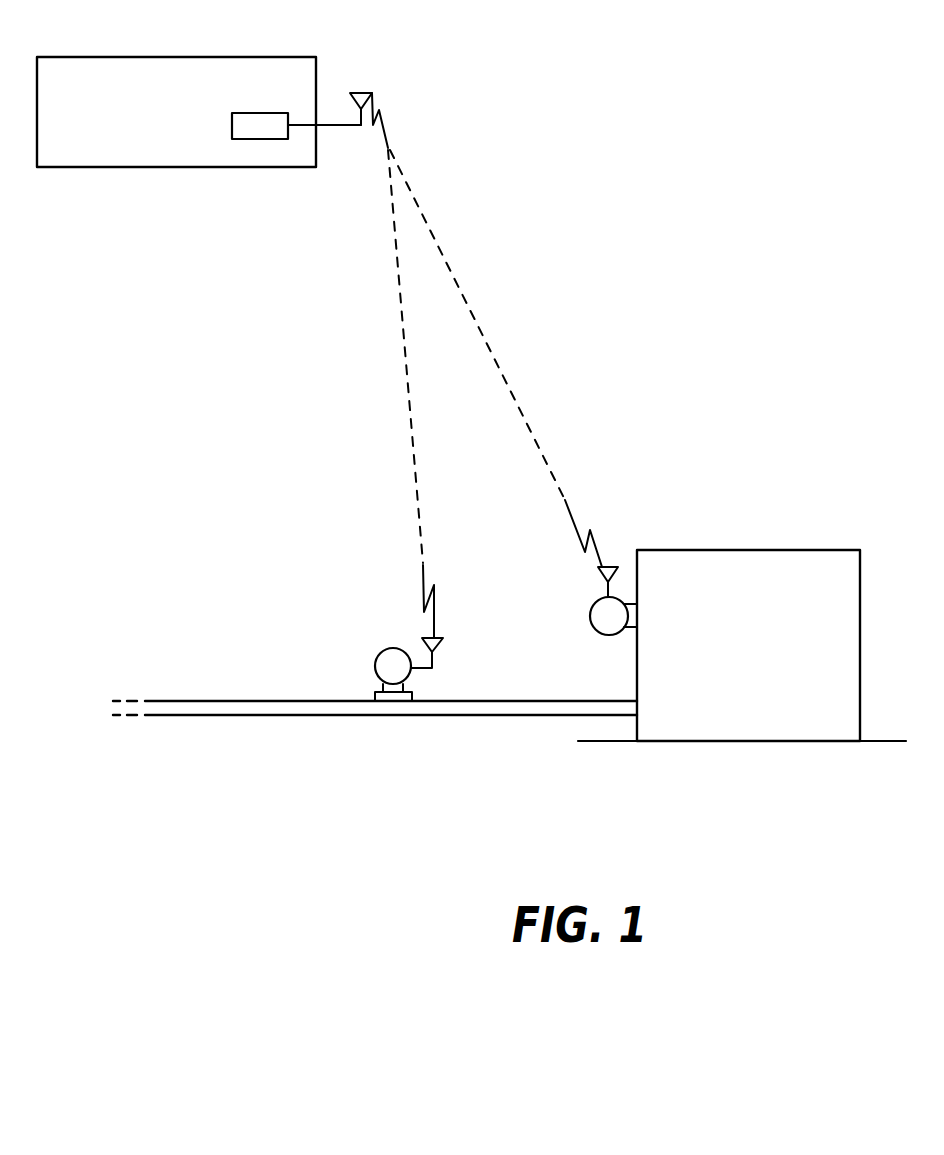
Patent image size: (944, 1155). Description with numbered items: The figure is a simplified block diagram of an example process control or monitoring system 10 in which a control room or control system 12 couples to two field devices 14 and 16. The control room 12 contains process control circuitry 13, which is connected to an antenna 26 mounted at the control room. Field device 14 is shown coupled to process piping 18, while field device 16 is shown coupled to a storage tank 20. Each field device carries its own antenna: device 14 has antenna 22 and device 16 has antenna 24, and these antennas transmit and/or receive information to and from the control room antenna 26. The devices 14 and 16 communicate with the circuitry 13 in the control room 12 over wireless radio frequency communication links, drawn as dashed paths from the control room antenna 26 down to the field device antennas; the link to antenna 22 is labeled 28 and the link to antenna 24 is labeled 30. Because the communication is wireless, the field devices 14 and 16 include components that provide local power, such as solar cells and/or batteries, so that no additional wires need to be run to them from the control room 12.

The process control or monitoring system 10 is at (658, 228).
The control room 12 is at (165, 57).
The process control circuitry 13 is at (253, 140).
The field device 14 is at (379, 657).
The field device 16 is at (590, 616).
The process piping 18 is at (302, 710).
The storage tank 20 is at (728, 556).
The antenna 22 is at (440, 644).
The antenna 24 is at (600, 573).
The antenna 26 is at (370, 93).
The wireless radio frequency communication link 28 is at (411, 390).
The wireless communication link 30 is at (508, 371).